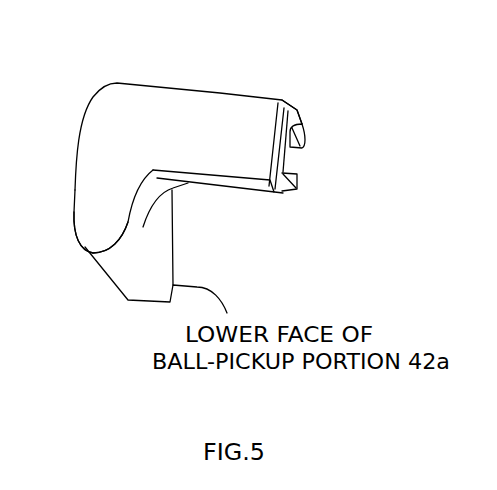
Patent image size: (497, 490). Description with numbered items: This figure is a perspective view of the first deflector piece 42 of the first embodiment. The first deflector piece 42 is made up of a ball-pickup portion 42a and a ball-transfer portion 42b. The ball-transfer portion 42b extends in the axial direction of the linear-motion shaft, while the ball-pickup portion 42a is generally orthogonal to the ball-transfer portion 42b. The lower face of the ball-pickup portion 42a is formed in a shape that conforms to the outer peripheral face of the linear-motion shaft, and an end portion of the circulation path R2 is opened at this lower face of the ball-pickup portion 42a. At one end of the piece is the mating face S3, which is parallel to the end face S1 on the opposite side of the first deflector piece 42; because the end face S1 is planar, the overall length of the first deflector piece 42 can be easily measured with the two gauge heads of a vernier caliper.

The first deflector piece 42 is at (220, 107).
The ball-pickup portion 42a is at (128, 283).
The ball-transfer portion 42b is at (247, 162).
The end face S1 is at (88, 255).
The mating face S3 is at (300, 118).
The circulation path R2 is at (302, 136).